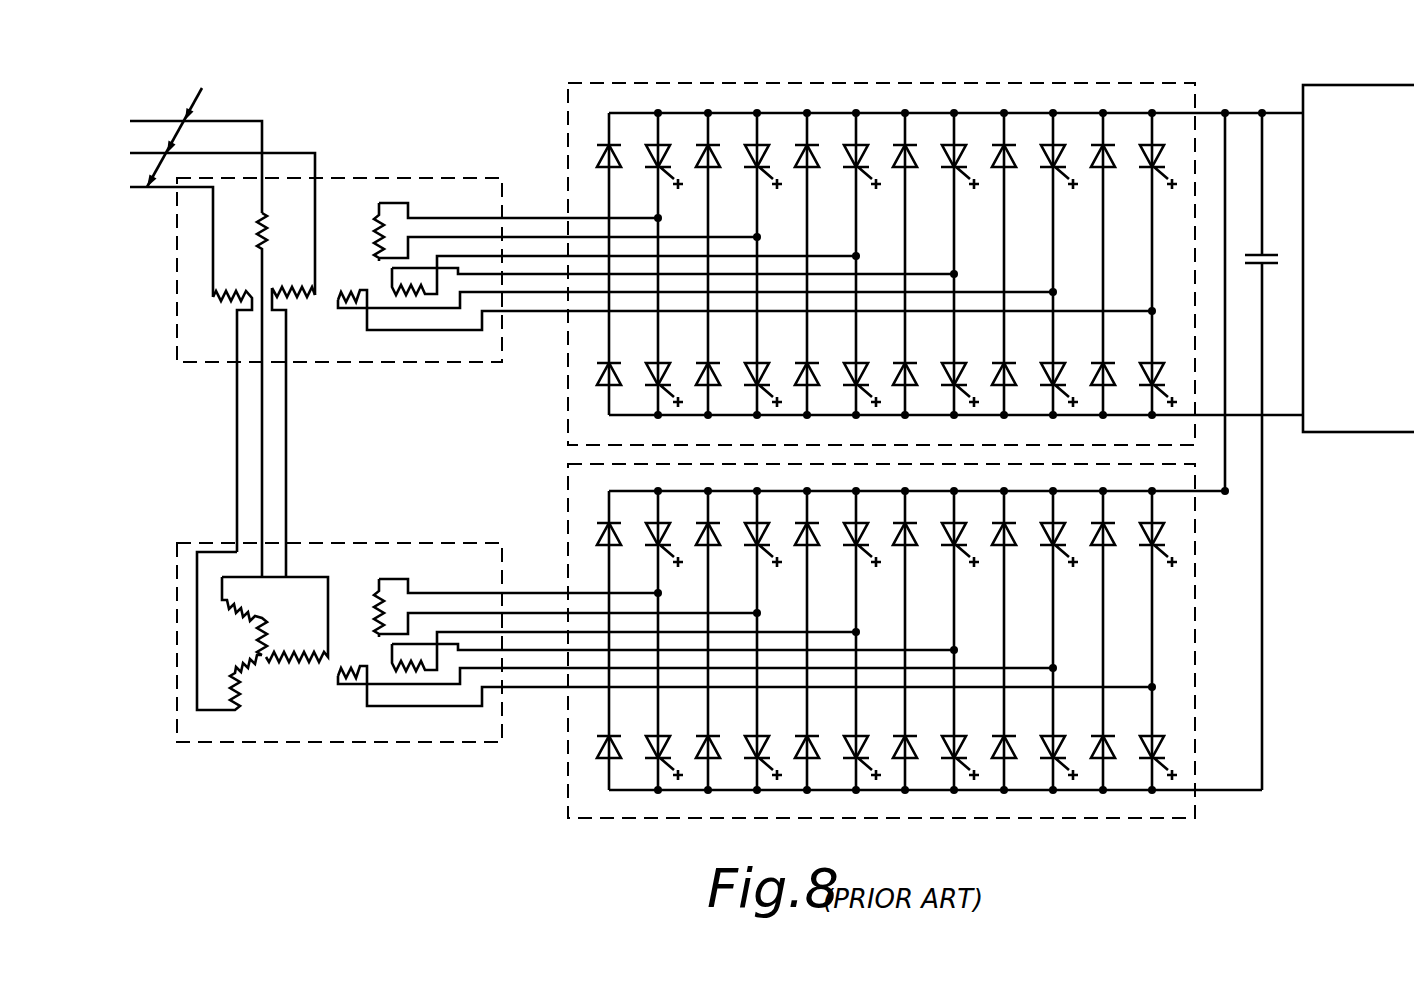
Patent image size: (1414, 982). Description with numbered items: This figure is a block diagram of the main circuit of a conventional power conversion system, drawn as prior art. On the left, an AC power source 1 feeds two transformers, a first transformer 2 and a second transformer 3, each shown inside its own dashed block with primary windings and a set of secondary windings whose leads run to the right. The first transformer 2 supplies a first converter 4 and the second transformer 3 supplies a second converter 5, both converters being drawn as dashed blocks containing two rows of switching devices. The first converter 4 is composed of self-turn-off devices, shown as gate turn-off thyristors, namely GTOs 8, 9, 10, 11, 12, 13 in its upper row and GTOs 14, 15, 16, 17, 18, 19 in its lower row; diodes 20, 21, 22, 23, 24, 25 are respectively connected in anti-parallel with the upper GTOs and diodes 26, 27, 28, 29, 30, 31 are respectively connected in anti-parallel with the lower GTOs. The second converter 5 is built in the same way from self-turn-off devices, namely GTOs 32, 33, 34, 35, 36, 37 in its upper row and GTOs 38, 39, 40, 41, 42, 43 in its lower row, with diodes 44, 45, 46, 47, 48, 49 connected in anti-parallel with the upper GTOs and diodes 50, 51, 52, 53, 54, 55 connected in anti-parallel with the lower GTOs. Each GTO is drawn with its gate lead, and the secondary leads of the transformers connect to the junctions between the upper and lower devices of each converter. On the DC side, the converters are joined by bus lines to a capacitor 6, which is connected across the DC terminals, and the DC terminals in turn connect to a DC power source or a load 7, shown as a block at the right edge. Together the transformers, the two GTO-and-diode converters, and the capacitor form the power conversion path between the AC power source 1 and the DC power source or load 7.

The AC power source 1 is at (238, 173).
The first transformer 2 is at (457, 177).
The second transformer 3 is at (450, 542).
The first converter 4 is at (943, 83).
The second converter 5 is at (897, 822).
The capacitor 6 is at (1270, 252).
The DC power source or load 7 is at (1383, 85).
The self-turn-off device 8 is at (652, 143).
The self-turn-off device 9 is at (751, 143).
The self-turn-off device 10 is at (850, 143).
The self-turn-off device 11 is at (948, 143).
The self-turn-off device 12 is at (1047, 143).
The self-turn-off device 13 is at (1146, 143).
The self-turn-off device 14 is at (649, 372).
The self-turn-off device 15 is at (748, 372).
The self-turn-off device 16 is at (847, 372).
The self-turn-off device 17 is at (945, 372).
The self-turn-off device 18 is at (1044, 372).
The self-turn-off device 19 is at (1143, 372).
The diode 20 is at (615, 157).
The diode 21 is at (714, 157).
The diode 22 is at (813, 157).
The diode 23 is at (911, 157).
The diode 24 is at (1010, 157).
The diode 25 is at (1109, 157).
The diode 26 is at (618, 372).
The diode 27 is at (717, 372).
The diode 28 is at (816, 372).
The diode 29 is at (914, 372).
The diode 30 is at (1013, 372).
The diode 31 is at (1112, 372).
The self-turn-off device 32 is at (650, 528).
The self-turn-off device 33 is at (749, 528).
The self-turn-off device 34 is at (848, 528).
The self-turn-off device 35 is at (946, 528).
The self-turn-off device 36 is at (1045, 528).
The self-turn-off device 37 is at (1144, 528).
The self-turn-off device 38 is at (650, 748).
The self-turn-off device 39 is at (749, 748).
The self-turn-off device 40 is at (848, 748).
The self-turn-off device 41 is at (946, 748).
The self-turn-off device 42 is at (1045, 748).
The self-turn-off device 43 is at (1144, 748).
The diode 44 is at (615, 534).
The diode 45 is at (714, 534).
The diode 46 is at (813, 534).
The diode 47 is at (911, 534).
The diode 48 is at (1010, 534).
The diode 49 is at (1109, 534).
The diode 50 is at (617, 747).
The diode 51 is at (716, 747).
The diode 52 is at (815, 747).
The diode 53 is at (913, 747).
The diode 54 is at (1012, 747).
The diode 55 is at (1111, 747).